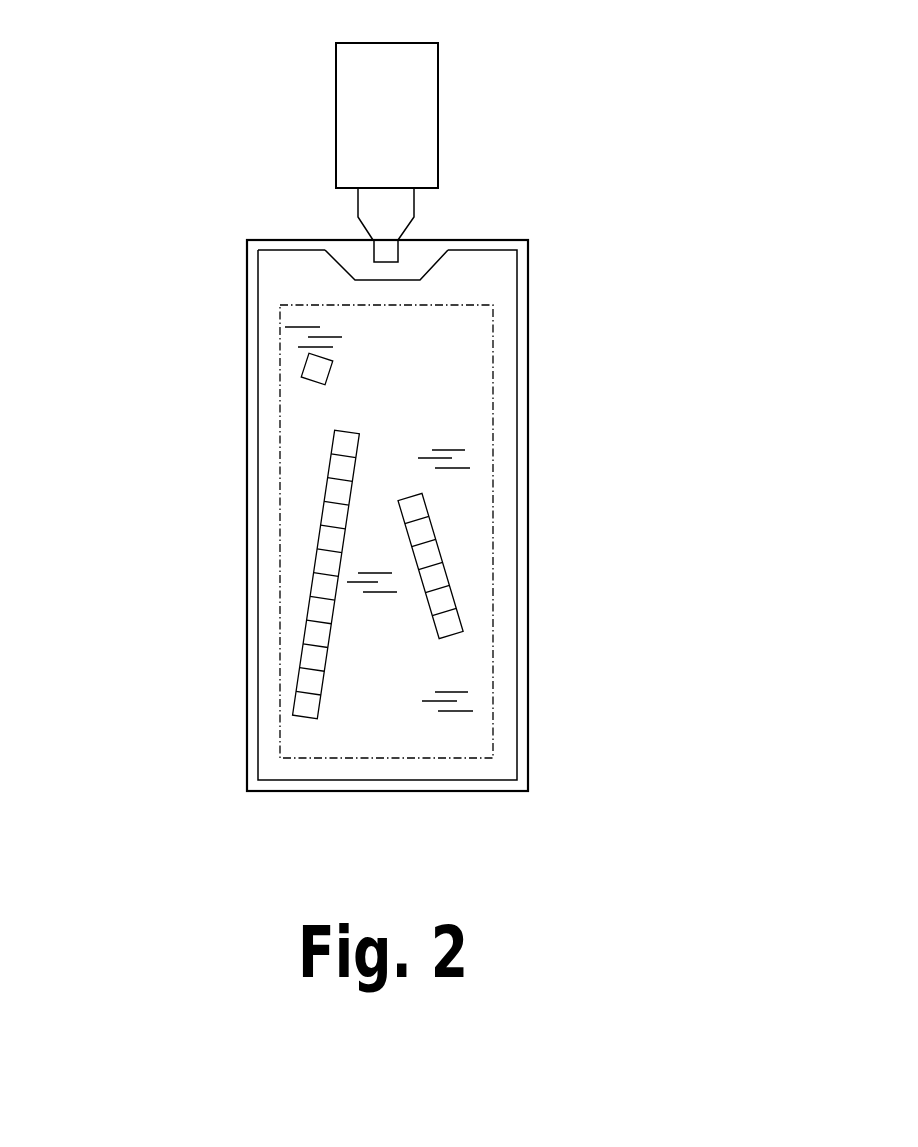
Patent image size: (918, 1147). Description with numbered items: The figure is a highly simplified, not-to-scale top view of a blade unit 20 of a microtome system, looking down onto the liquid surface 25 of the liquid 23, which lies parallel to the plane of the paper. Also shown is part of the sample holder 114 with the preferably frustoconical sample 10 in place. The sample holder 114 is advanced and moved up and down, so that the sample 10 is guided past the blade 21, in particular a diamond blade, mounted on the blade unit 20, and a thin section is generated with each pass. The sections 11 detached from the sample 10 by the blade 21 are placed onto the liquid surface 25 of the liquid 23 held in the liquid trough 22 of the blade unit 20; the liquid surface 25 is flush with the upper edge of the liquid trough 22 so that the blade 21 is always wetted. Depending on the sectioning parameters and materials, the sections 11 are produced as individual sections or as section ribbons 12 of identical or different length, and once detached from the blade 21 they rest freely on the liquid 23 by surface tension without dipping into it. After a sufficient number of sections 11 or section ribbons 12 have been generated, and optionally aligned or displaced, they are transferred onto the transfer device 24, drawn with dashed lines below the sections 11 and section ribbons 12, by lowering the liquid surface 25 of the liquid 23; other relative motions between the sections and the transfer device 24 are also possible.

The sample holder 114 is at (422, 115).
The sample 10 is at (415, 222).
The blade unit 20 is at (312, 220).
The blade 21 is at (350, 247).
The liquid trough 22 is at (247, 310).
The liquid 23 is at (505, 310).
The transfer device 24 is at (277, 605).
The liquid surface 25 is at (491, 272).
The sections 11 is at (387, 262).
The section ribbons 12 is at (312, 476).